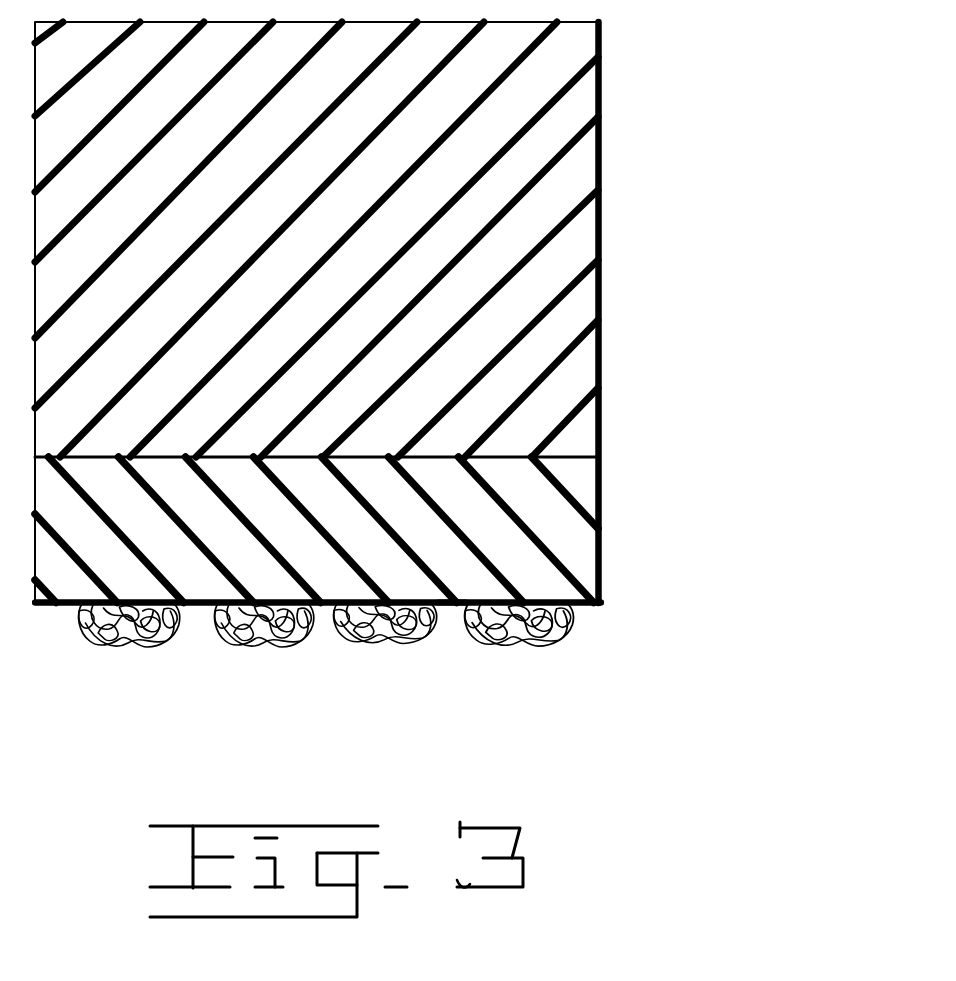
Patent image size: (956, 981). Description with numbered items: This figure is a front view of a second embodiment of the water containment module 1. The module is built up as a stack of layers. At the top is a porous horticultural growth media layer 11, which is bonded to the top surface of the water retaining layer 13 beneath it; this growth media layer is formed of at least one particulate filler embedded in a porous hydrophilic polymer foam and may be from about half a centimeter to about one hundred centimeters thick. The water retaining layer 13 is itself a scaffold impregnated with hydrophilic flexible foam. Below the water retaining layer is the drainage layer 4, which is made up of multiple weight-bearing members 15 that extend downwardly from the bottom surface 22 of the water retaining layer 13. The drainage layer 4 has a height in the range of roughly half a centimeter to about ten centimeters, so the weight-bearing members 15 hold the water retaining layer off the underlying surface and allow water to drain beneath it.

The water containment module 1 is at (645, 311).
The porous horticultural growth media layer 11 is at (636, 132).
The water retaining layer 13 is at (640, 512).
The drainage layer 4 is at (615, 624).
The weight-bearing members 15 is at (130, 653).
The bottom surface 22 is at (453, 646).